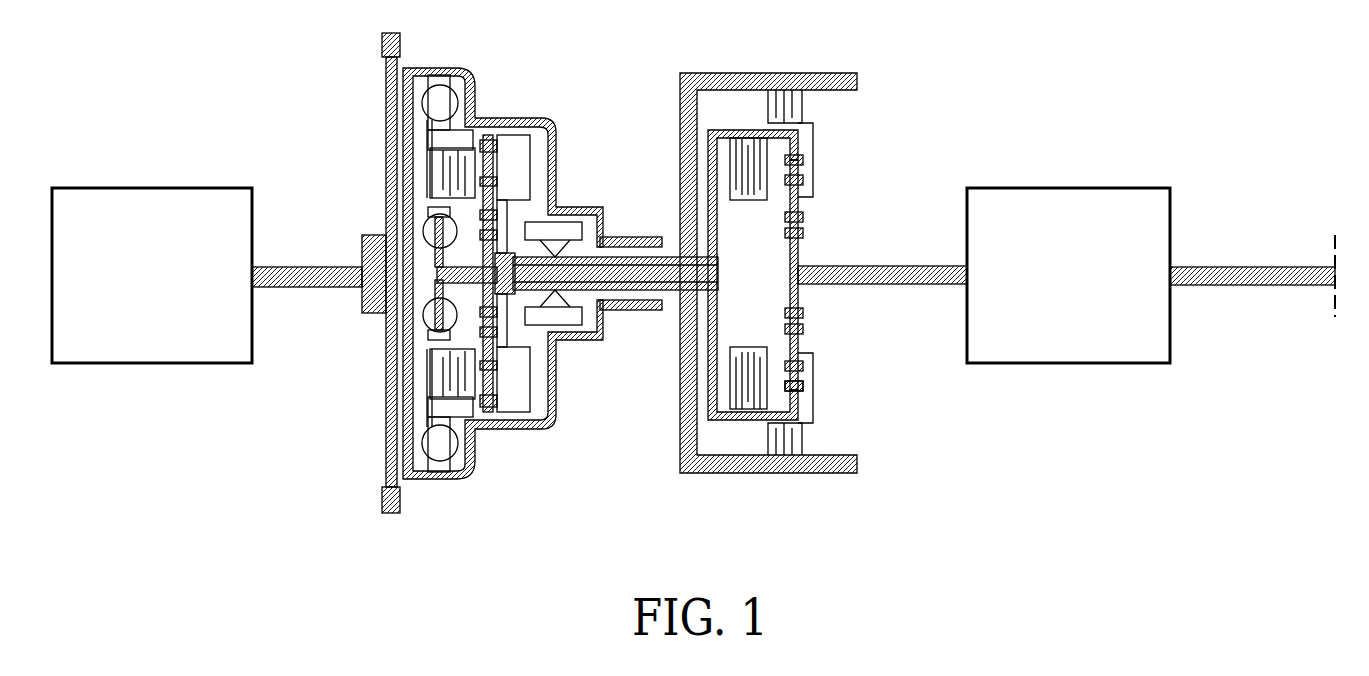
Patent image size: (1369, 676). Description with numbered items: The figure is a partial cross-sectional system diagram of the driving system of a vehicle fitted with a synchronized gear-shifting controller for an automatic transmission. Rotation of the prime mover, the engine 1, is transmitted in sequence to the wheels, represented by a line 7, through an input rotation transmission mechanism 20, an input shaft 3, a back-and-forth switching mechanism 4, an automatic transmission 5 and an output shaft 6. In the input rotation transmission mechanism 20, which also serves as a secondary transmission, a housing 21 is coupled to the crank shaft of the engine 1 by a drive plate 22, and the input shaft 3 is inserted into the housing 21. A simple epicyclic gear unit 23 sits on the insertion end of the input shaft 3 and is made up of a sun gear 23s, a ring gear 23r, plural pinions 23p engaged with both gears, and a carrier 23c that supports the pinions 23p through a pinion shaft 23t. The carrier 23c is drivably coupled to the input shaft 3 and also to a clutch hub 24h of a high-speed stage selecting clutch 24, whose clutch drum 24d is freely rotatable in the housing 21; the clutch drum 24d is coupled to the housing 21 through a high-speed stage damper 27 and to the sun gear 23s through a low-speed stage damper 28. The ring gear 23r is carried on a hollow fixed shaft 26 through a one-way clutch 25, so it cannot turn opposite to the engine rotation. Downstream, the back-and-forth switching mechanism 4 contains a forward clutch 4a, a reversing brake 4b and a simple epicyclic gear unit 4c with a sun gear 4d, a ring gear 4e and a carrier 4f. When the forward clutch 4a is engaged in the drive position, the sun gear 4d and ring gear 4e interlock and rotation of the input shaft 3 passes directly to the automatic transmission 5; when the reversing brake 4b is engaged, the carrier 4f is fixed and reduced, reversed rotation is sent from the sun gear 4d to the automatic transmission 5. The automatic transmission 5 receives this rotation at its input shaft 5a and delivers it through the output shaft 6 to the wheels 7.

The engine 1 is at (235, 188).
The input shaft 3 is at (668, 257).
The back-and-forth switching mechanism 4 is at (779, 246).
The forward clutch 4a is at (733, 130).
The reversing brake 4b is at (790, 100).
The epicyclic gear unit 4c is at (818, 326).
The sun gear 4d is at (798, 296).
The ring gear 4e is at (800, 389).
The carrier 4f is at (813, 360).
The automatic transmission 5 is at (1150, 188).
The input shaft of automatic transmission 5a is at (905, 267).
The output shaft 6 is at (1250, 267).
The wheels 7 is at (1336, 300).
The input rotation transmission mechanism 20 is at (483, 267).
The housing 21 is at (463, 78).
The drive plate 22 is at (400, 58).
The epicyclic gear unit 23 is at (500, 168).
The carrier 23c is at (500, 225).
The pinions 23p is at (497, 370).
The ring gear 23r is at (450, 145).
The sun gear 23s is at (483, 248).
The pinion shaft 23t is at (493, 343).
The high-speed stage selecting clutch 24 is at (470, 103).
The clutch drum 24d is at (430, 148).
The clutch hub 24h is at (435, 203).
The one-way clutch 25 is at (557, 240).
The hollow fixed shaft 26 is at (634, 243).
The high-speed stage damper 27 is at (441, 103).
The low-speed stage damper 28 is at (452, 218).